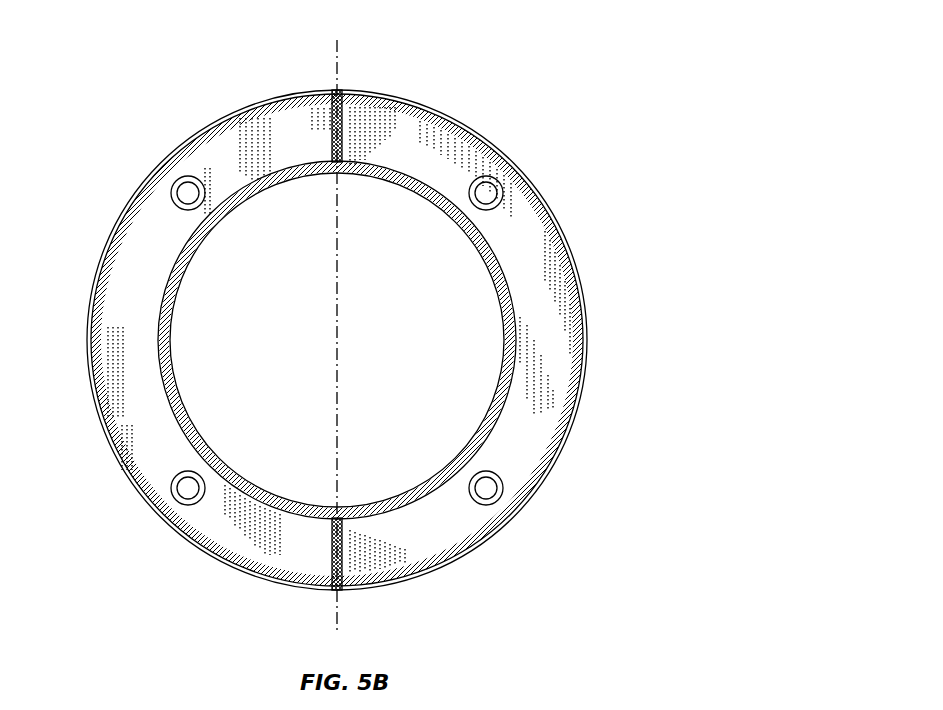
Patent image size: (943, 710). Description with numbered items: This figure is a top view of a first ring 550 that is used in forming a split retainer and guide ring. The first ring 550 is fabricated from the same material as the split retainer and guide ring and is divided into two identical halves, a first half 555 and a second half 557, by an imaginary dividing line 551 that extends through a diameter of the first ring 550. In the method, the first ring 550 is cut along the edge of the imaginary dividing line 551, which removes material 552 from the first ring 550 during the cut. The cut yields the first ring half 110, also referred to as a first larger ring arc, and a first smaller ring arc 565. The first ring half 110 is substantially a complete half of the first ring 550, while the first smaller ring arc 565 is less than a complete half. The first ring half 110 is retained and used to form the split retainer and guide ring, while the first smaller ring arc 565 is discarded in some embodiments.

The first ring 550 is at (547, 41).
The imaginary dividing line 551 is at (338, 63).
The material 552 is at (338, 173).
The first half 555 is at (177, 125).
The second half 557 is at (494, 126).
The first smaller ring arc 565 is at (550, 297).
The first ring half 110 is at (120, 273).